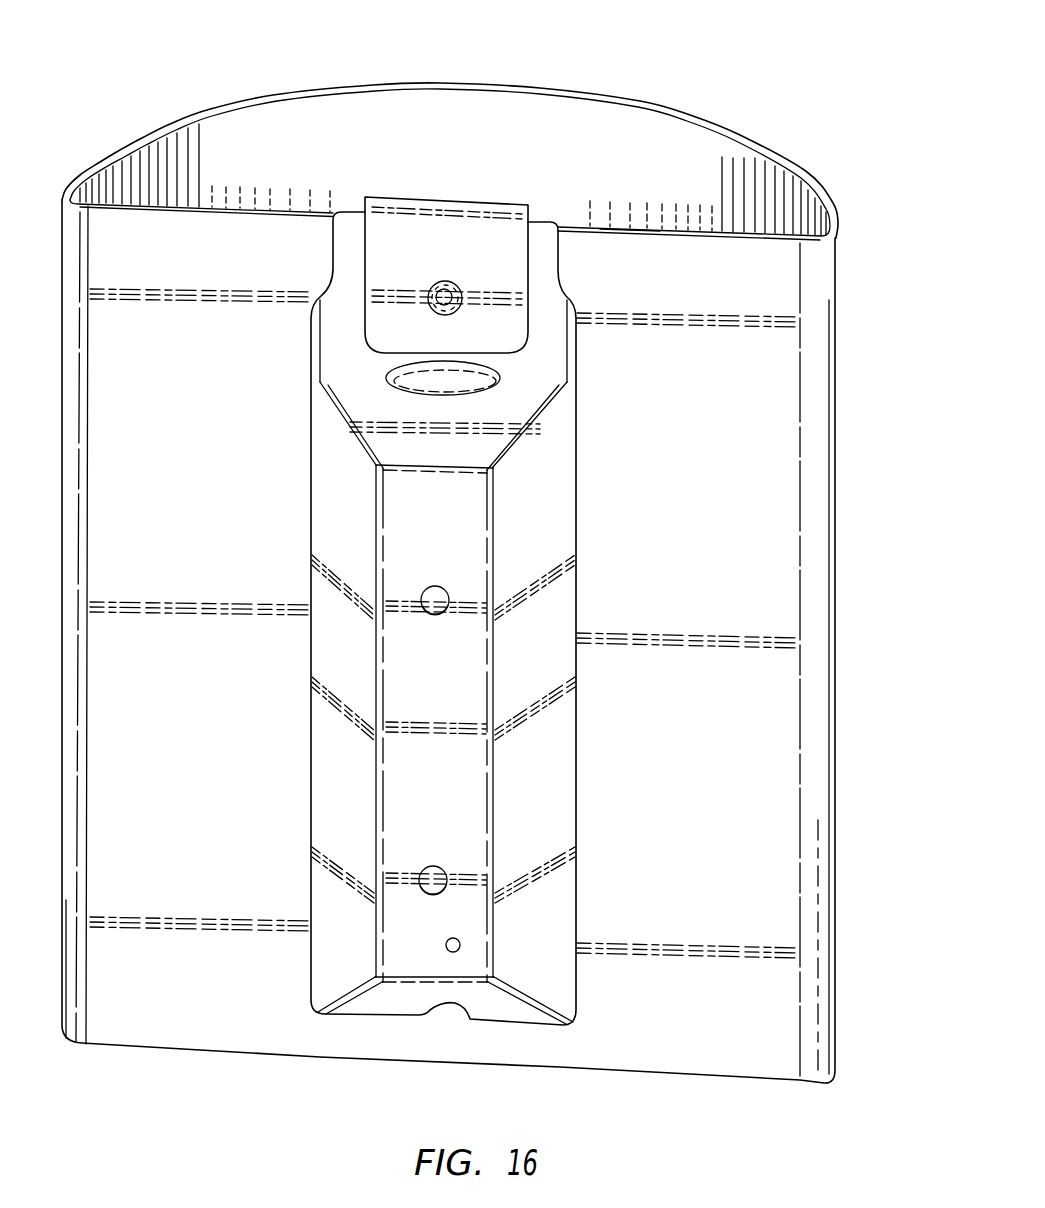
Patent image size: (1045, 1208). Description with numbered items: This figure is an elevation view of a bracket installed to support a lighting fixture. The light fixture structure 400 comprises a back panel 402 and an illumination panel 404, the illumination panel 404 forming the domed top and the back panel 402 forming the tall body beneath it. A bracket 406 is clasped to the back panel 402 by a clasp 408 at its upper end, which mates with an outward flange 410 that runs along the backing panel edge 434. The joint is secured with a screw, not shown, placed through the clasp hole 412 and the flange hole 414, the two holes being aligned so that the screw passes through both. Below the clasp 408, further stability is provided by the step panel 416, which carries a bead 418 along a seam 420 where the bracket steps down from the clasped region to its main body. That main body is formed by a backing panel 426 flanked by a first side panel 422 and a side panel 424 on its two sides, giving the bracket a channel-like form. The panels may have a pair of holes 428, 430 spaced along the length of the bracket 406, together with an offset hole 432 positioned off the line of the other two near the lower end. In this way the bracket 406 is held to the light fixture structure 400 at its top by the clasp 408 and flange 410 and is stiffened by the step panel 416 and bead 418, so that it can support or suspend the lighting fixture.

The light fixture structure 400 is at (797, 120).
The back panel 402 is at (775, 371).
The illumination panel 404 is at (605, 92).
The bracket 406 is at (578, 497).
The clasp 408 is at (436, 202).
The outward flange 410 is at (561, 272).
The clasp hole 412 is at (448, 283).
The flange hole 414 is at (428, 302).
The step panel 416 is at (513, 433).
The bead 418 is at (490, 374).
The seam 420 is at (348, 384).
The first side panel 422 is at (564, 455).
The side panel 424 is at (340, 527).
The backing panel 426 is at (471, 564).
The hole 428 is at (437, 616).
The hole 430 is at (437, 866).
The offset hole 432 is at (449, 952).
The backing panel edge 434 is at (621, 229).